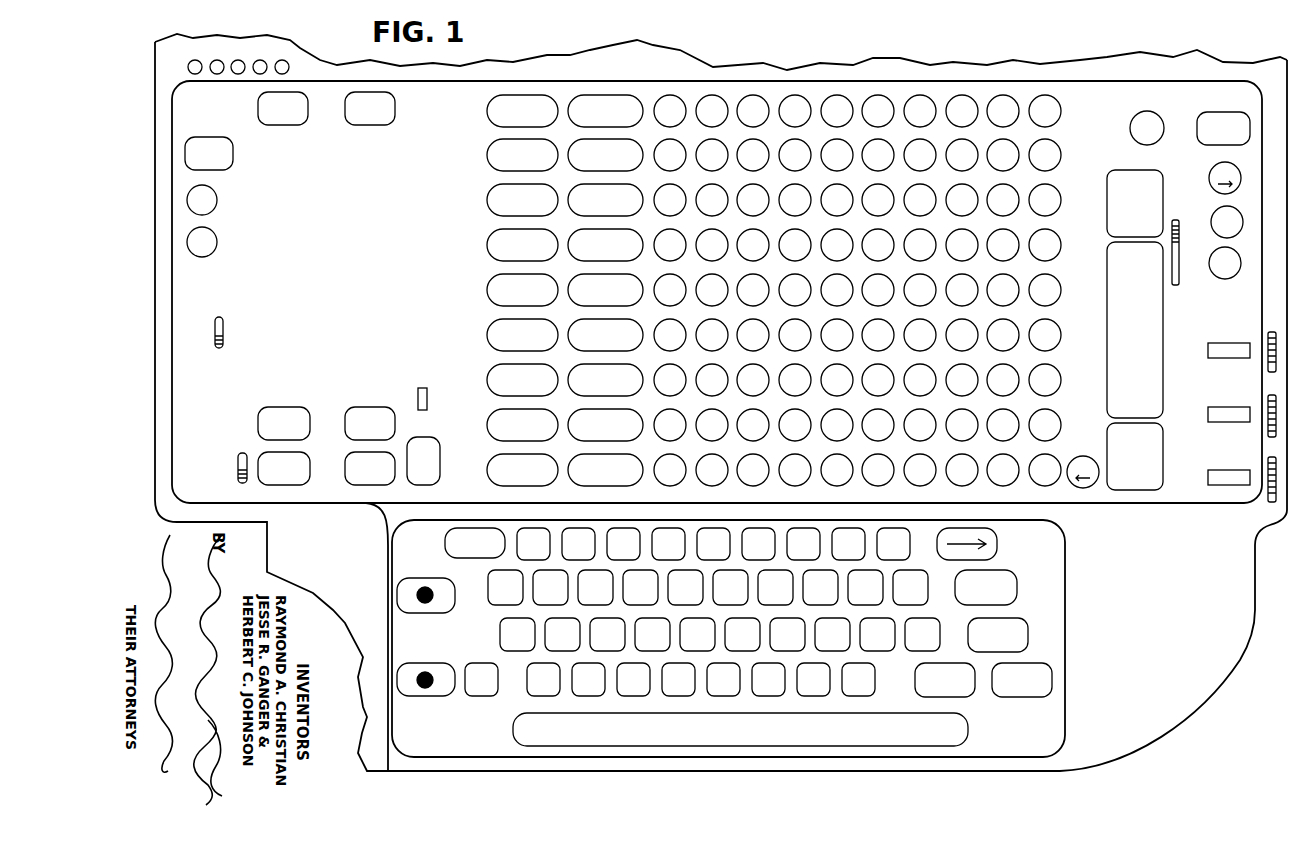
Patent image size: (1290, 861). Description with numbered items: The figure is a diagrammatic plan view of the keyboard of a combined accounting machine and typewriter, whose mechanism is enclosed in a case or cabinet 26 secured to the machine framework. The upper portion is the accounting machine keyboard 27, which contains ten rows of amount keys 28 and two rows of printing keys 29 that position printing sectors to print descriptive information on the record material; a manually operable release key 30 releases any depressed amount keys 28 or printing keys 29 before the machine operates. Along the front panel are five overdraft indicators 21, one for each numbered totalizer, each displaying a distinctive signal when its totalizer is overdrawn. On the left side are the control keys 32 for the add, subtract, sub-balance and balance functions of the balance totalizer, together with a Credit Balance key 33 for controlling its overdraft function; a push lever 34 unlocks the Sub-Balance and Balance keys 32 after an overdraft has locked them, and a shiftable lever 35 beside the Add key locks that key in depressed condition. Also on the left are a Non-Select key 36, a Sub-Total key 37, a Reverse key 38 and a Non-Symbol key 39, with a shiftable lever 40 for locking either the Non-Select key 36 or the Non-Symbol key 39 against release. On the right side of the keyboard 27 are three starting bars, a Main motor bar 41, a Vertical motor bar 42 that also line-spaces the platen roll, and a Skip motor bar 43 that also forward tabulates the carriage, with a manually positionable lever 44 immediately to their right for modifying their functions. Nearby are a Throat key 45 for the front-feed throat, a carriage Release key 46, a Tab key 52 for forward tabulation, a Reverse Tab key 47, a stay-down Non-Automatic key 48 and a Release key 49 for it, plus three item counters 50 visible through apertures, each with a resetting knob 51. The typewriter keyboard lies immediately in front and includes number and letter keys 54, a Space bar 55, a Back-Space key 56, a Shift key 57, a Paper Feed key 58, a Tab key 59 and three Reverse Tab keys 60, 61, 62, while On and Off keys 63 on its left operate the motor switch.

The overdraft indicator 21 is at (188, 67).
The case 26 is at (157, 272).
The accounting machine keyboard 27 is at (1075, 88).
The amount keys 28 is at (712, 95).
The printing keys 29 is at (583, 95).
The release key 30 is at (440, 468).
The control keys 32 is at (352, 452).
The Credit Balance key 33 is at (395, 108).
The push lever 34 is at (422, 388).
The shiftable lever 35 is at (238, 468).
The Non-Select key 36 is at (210, 137).
The Sub-Total key 37 is at (258, 108).
The Reverse key 38 is at (217, 200).
The Non-Symbol key 39 is at (217, 242).
The shiftable lever 40 is at (223, 332).
The Main motor bar 41 is at (1107, 316).
The Vertical motor bar 42 is at (1107, 197).
The Skip motor bar 43 is at (1107, 428).
The manually positionable lever 44 is at (1176, 238).
The Throat key 45 is at (1202, 114).
The carriage Release key 46 is at (1131, 121).
The Reverse Tab key 47 is at (1210, 171).
The Non-Automatic key 48 is at (1213, 214).
The Release key 49 is at (1220, 278).
The item counters 50 is at (1238, 343).
The resetting knob 51 is at (1268, 398).
The Tab key 52 is at (1089, 457).
The number and letter keys 54 is at (565, 528).
The Space bar 55 is at (775, 738).
The Back-Space key 56 is at (445, 542).
The Shift key 57 is at (493, 665).
The Paper Feed key 58 is at (1000, 697).
The Tab key 59 is at (925, 697).
The Reverse Tab key 60 is at (1028, 634).
The Reverse Tab key 61 is at (1017, 588).
The Reverse Tab key 62 is at (997, 543).
The On and Off keys 63 is at (436, 663).